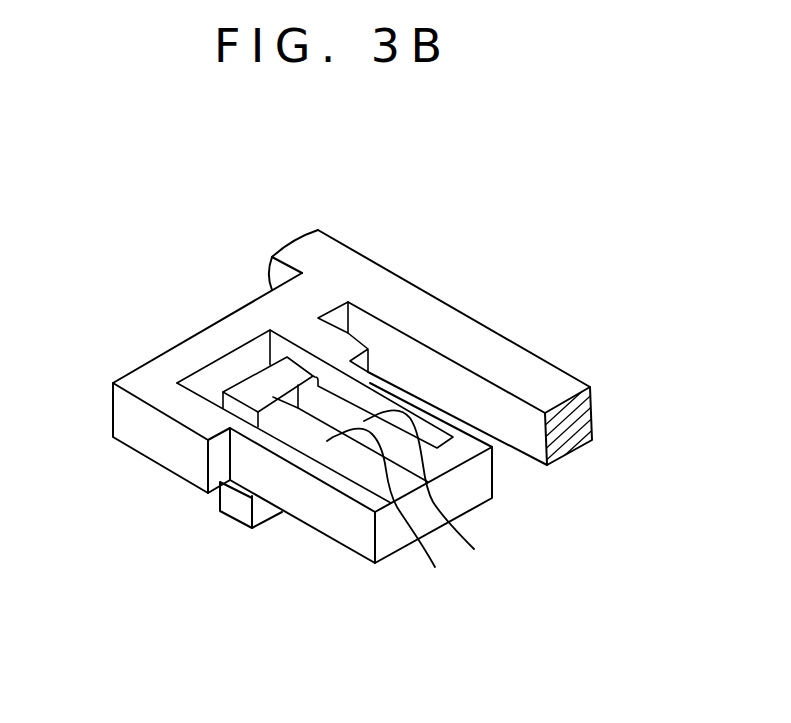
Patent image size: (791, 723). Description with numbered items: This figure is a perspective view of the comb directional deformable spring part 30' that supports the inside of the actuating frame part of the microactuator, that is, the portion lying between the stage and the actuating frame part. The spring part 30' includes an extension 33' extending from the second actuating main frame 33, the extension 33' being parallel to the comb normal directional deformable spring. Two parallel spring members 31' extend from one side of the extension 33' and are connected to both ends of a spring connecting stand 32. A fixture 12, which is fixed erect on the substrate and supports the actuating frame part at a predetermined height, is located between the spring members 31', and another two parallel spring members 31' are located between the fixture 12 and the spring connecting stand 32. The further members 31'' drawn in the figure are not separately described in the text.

The comb directional deformable spring part 30' is at (304, 385).
The fixture 12 is at (267, 385).
The extension 33' is at (201, 383).
The second actuating main frame 33 is at (497, 353).
The spring connecting stand 32 is at (477, 490).
The spring member 31' is at (335, 420).
The lead wire 31'' is at (427, 511).